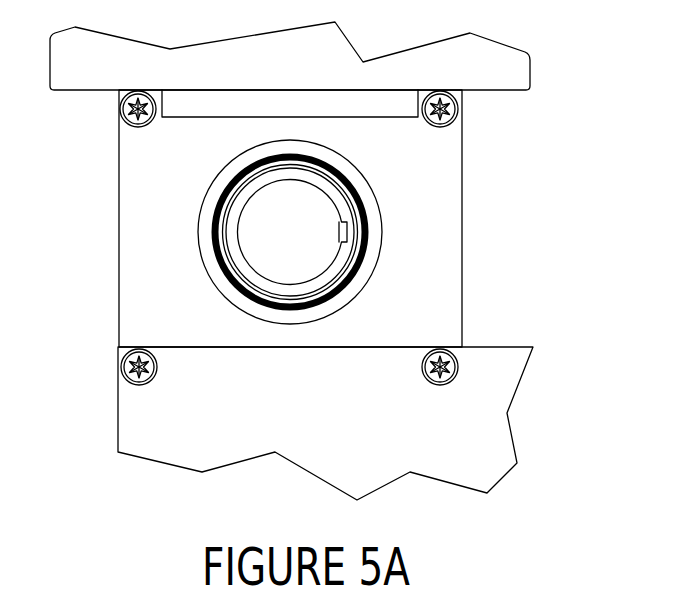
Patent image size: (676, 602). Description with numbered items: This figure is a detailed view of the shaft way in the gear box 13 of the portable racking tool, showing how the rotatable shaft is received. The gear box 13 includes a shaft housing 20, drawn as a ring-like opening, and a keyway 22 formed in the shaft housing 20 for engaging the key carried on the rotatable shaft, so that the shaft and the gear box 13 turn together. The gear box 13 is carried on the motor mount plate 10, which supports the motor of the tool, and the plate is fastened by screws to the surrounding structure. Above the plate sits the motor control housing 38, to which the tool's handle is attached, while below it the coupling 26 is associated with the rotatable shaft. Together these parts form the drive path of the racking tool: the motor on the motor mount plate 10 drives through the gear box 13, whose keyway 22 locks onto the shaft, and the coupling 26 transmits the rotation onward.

The motor mount plate 10 is at (133, 197).
The gear box 13 is at (210, 200).
The shaft housing 20 is at (247, 273).
The keyway 22 is at (347, 233).
The coupling 26 is at (498, 368).
The motor control housing 38 is at (501, 70).